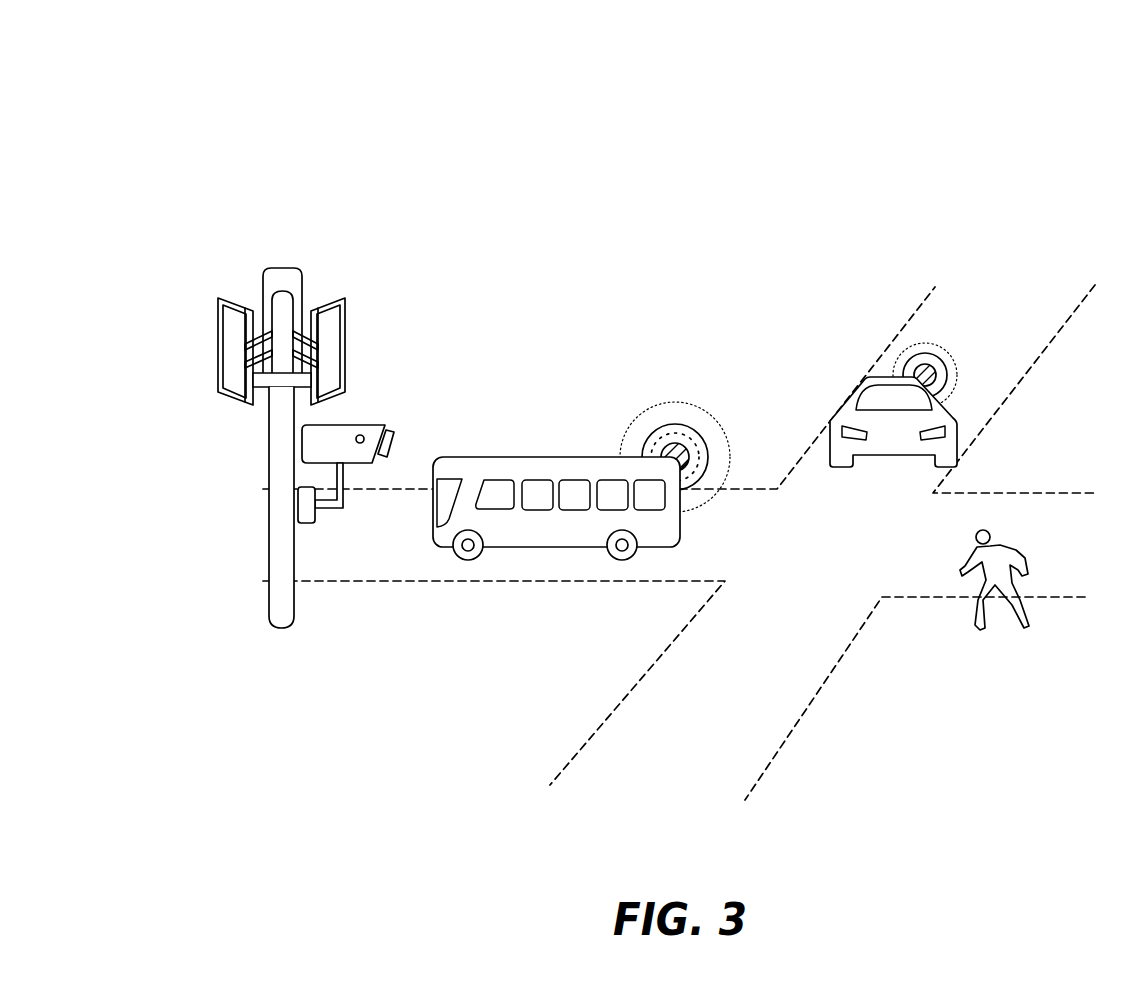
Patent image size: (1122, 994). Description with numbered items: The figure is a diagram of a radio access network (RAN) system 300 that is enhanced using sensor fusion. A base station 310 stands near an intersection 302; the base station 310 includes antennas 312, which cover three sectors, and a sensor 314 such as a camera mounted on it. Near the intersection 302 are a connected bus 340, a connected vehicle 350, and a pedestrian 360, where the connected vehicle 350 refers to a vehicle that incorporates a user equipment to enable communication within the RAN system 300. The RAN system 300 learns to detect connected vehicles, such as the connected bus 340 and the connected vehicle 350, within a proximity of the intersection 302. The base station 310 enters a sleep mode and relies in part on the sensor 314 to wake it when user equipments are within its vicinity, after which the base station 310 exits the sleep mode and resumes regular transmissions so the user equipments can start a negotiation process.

The radio access network (RAN) system 300 is at (330, 92).
The intersection 302 is at (835, 557).
The base station 310 is at (272, 428).
The antennas 312 is at (283, 291).
The sensor 314 is at (395, 430).
The connected bus 340 is at (553, 531).
The connected vehicle 350 is at (956, 414).
The pedestrian 360 is at (1020, 553).